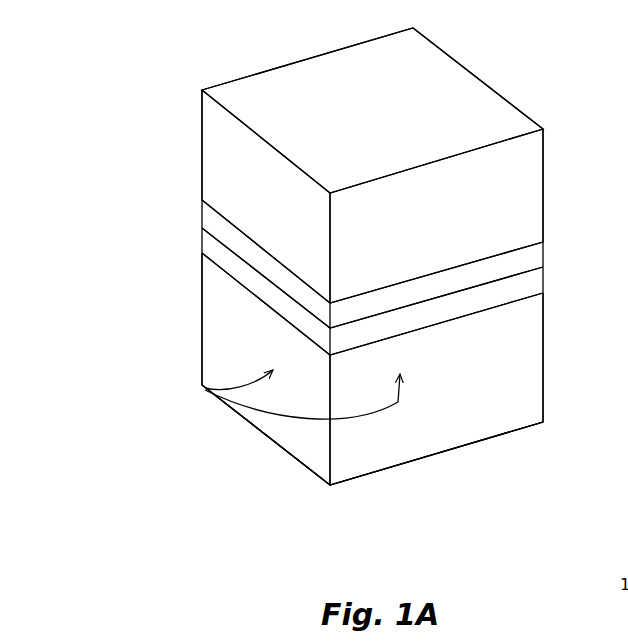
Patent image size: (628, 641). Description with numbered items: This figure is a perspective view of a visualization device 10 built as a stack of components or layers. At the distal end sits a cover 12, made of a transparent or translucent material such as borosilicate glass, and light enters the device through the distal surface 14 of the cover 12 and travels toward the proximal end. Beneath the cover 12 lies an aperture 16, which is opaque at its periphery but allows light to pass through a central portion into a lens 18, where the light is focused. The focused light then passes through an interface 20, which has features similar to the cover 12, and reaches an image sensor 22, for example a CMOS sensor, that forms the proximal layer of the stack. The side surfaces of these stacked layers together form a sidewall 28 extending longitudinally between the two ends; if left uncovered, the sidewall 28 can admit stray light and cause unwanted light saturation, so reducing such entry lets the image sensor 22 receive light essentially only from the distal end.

The visualization device 10 is at (168, 71).
The cover 12 is at (543, 187).
The distal surface 14 is at (270, 85).
The aperture 16 is at (543, 258).
The lens 18 is at (543, 280).
The interface 20 is at (543, 362).
The image sensor 22 is at (485, 440).
The sidewall 28 is at (205, 388).